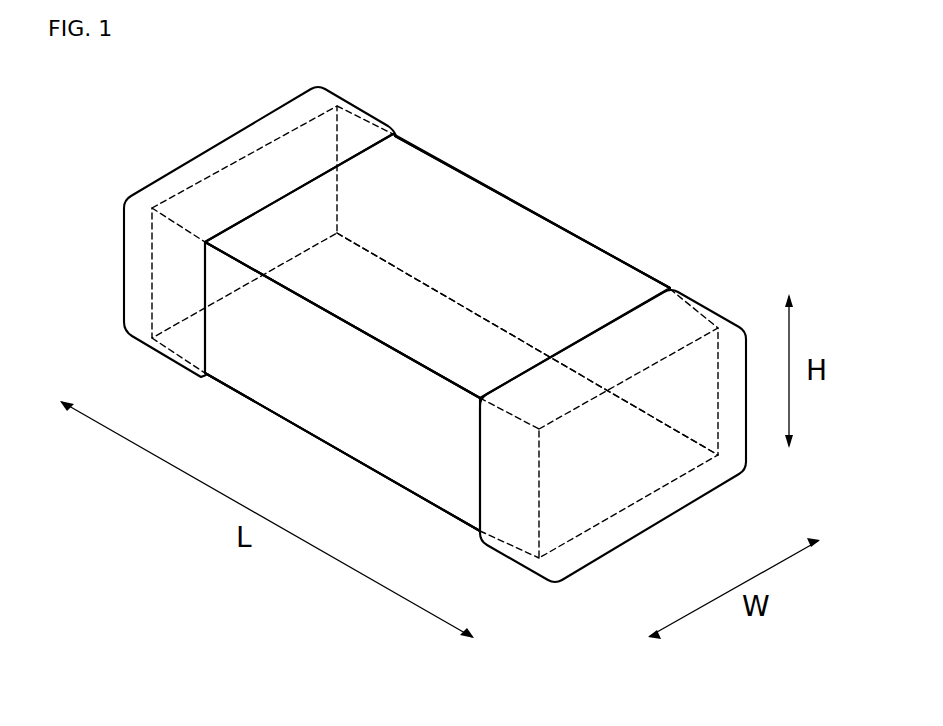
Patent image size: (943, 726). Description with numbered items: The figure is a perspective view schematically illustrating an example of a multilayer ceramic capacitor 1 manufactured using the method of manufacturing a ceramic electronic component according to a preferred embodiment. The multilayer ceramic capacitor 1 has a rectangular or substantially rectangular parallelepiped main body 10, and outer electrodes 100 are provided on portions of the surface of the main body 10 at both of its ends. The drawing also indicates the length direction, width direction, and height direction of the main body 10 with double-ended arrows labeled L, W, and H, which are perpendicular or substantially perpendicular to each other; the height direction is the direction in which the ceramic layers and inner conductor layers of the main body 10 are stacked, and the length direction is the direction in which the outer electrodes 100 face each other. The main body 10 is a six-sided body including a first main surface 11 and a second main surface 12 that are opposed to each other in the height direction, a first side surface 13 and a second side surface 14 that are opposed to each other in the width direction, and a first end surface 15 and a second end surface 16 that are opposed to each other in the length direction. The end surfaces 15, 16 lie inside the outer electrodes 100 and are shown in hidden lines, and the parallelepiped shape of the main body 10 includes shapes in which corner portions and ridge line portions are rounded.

The multilayer ceramic capacitor 1 is at (727, 168).
The main body 10 is at (498, 230).
The first main surface 11 is at (438, 203).
The second main surface 12 is at (411, 456).
The first side surface 13 is at (278, 386).
The second side surface 14 is at (593, 301).
The first end surface 15 is at (202, 213).
The second end surface 16 is at (597, 473).
The outer electrodes 100 is at (260, 133).